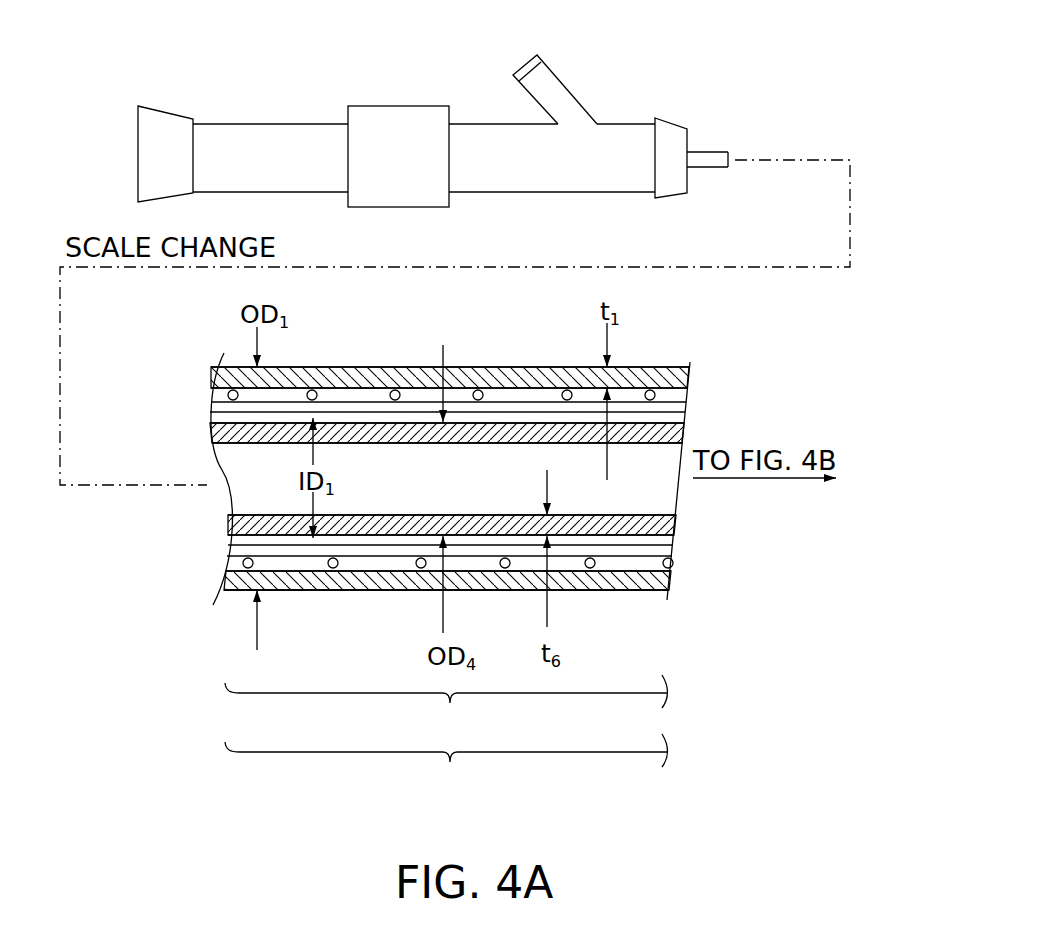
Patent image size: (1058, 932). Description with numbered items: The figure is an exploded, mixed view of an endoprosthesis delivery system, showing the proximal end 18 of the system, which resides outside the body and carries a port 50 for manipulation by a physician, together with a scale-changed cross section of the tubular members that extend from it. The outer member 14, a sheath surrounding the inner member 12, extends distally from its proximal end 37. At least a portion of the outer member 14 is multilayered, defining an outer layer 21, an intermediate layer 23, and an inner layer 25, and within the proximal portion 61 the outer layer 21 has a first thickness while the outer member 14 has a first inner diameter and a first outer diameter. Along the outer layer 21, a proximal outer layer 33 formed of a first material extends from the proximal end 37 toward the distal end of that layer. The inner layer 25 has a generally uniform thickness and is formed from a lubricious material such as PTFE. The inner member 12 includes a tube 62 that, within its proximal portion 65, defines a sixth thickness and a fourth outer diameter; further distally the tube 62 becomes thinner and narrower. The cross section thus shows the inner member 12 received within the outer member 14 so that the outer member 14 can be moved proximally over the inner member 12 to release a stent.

The proximal end 18 is at (339, 105).
The port 50 is at (518, 62).
The proximal end of outer member 37 is at (688, 148).
The outer member 14 is at (719, 141).
The inner member 12 is at (209, 438).
The tube 62 is at (684, 528).
The outer layer 21 is at (693, 378).
The intermediate layer 23 is at (690, 397).
The inner layer 25 is at (683, 408).
The proximal outer layer 33 is at (592, 592).
The proximal portion 61 is at (446, 704).
The proximal portion 65 is at (446, 762).